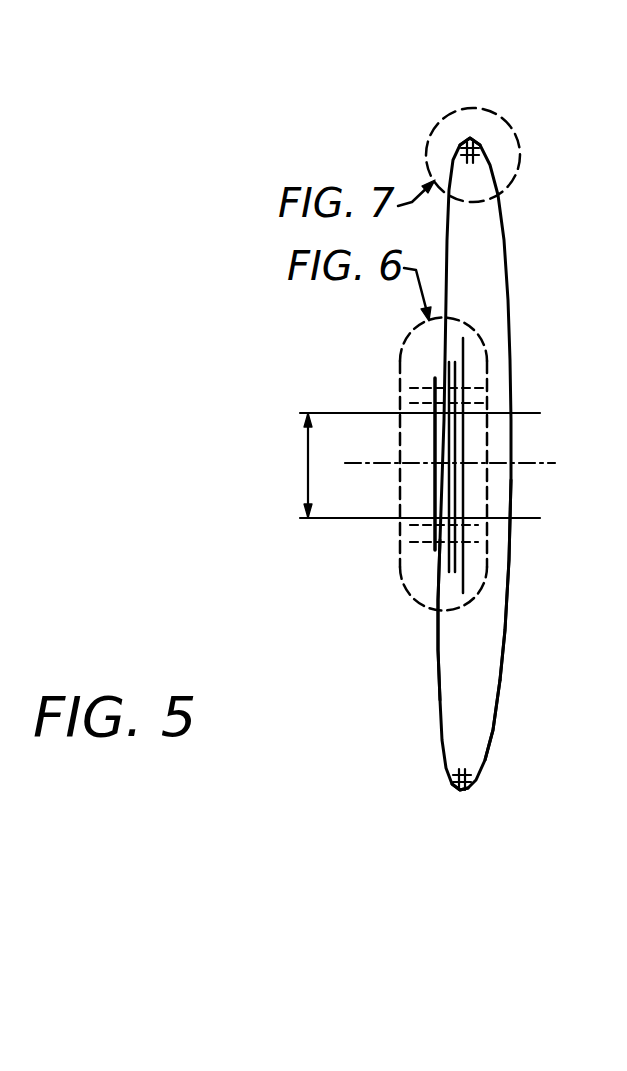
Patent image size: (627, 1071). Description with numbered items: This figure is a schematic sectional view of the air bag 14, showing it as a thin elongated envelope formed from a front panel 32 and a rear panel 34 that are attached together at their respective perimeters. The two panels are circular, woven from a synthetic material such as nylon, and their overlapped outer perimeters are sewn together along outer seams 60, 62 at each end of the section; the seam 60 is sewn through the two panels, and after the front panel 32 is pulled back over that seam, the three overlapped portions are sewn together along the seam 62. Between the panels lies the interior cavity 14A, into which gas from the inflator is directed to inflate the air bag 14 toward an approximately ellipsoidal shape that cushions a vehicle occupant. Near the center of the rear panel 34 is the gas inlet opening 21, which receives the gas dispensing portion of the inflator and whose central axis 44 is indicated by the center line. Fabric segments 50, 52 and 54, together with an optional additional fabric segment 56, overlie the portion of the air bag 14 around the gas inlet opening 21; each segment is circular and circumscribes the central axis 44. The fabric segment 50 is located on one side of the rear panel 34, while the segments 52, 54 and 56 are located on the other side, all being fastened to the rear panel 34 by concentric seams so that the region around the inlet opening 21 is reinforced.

The air bag 14 is at (428, 697).
The interior cavity 14A is at (472, 690).
The front panel 32 is at (508, 622).
The rear panel 34 is at (437, 661).
The outer seam 60 is at (466, 148).
The outer seam 62 is at (477, 136).
The fabric segment 52 is at (446, 368).
The fabric segment 54 is at (466, 366).
The additional fabric segment 56 is at (466, 342).
The fabric segment 50 is at (435, 550).
The central axis 44 is at (553, 465).
The gas inlet opening 21 is at (308, 469).